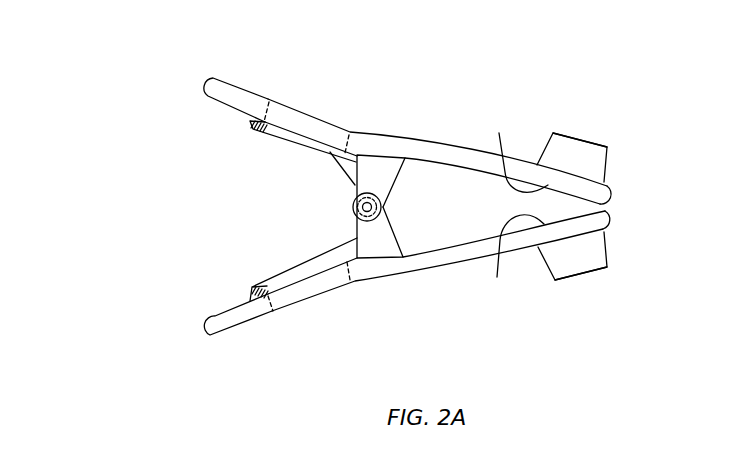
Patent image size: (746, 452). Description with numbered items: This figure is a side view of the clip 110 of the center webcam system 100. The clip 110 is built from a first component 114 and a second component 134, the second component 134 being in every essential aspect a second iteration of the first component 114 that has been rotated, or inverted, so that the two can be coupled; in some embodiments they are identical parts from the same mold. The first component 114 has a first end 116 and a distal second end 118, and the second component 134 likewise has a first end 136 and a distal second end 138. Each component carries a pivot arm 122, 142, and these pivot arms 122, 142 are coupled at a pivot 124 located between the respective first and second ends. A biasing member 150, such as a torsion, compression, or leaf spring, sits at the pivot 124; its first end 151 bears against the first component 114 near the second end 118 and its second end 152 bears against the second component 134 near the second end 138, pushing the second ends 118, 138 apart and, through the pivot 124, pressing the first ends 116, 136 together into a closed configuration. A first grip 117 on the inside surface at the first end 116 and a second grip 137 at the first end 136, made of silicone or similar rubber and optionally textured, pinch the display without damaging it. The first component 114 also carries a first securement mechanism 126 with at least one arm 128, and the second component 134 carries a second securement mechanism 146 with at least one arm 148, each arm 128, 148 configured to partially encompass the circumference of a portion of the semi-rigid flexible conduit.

The center webcam system 100 is at (375, 193).
The clip 110 is at (387, 194).
The first component 114 is at (387, 133).
The first end 116 is at (618, 189).
The first grip 117 is at (514, 149).
The second end 118 is at (210, 80).
The pivot arm 122 is at (398, 181).
The pivot 124 is at (356, 197).
The first securement mechanism 126 is at (580, 139).
The arm 128 is at (587, 153).
The second component 134 is at (380, 284).
The first end 136 is at (617, 223).
The second grip 137 is at (512, 260).
The second end 138 is at (207, 333).
The pivot arm 142 is at (398, 231).
The second securement mechanism 146 is at (580, 276).
The arm 148 is at (587, 257).
The biasing member 150 is at (352, 217).
The first end 151 is at (318, 147).
The second end 152 is at (327, 266).